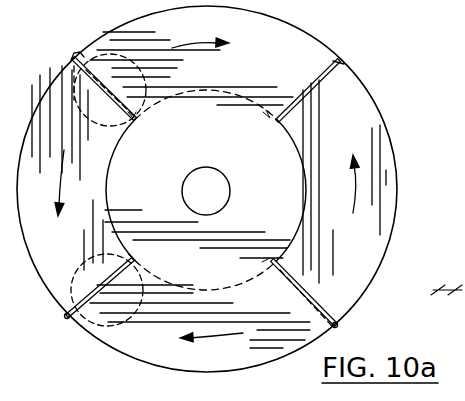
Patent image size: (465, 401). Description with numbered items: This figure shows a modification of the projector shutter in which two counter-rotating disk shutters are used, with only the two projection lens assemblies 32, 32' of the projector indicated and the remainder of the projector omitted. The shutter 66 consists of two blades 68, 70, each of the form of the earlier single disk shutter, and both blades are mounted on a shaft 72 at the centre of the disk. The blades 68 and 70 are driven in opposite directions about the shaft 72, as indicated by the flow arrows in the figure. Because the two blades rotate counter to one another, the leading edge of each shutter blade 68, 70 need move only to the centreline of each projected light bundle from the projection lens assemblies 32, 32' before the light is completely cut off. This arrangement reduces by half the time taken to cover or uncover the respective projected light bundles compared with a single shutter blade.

The projection lens assembly 32 is at (84, 71).
The projection lens assembly 32' is at (71, 293).
The shutter 66 is at (385, 65).
The shutter blade 68 is at (282, 50).
The shutter blade 70 is at (352, 122).
The shaft 72 is at (220, 193).